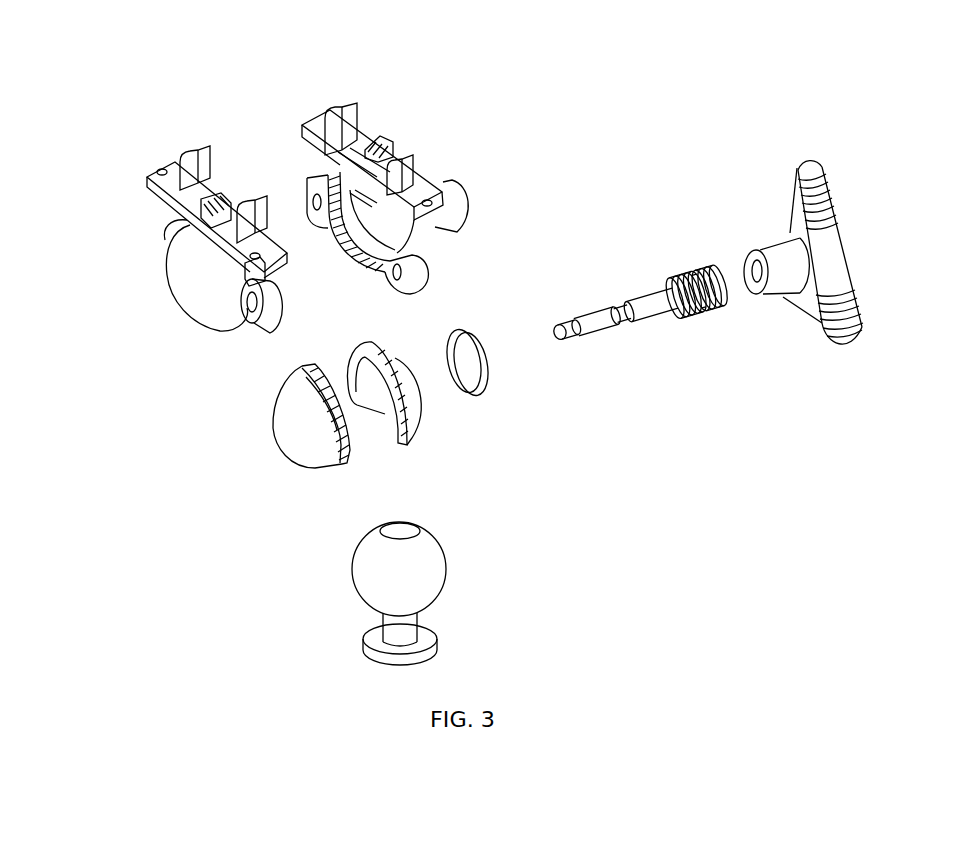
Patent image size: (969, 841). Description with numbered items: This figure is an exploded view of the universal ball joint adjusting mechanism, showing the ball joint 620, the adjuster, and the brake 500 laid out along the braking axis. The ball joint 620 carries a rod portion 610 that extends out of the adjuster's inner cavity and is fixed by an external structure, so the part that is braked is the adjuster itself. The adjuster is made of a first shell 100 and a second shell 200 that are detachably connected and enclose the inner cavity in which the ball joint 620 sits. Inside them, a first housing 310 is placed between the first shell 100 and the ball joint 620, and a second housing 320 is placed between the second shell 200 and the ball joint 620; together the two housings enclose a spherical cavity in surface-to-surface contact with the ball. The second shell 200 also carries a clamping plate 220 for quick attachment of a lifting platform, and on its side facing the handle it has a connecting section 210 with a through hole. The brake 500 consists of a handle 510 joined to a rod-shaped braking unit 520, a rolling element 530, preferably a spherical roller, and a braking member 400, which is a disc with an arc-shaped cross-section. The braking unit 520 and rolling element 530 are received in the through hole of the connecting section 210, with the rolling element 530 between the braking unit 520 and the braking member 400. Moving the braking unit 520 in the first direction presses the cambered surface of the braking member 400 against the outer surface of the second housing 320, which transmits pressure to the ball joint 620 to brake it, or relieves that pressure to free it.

The first shell 100 is at (150, 272).
The second shell 200 is at (313, 160).
The connecting section 210 is at (450, 192).
The clamping plate 220 is at (380, 148).
The first housing 310 is at (290, 435).
The second housing 320 is at (423, 405).
The braking member 400 is at (490, 367).
The brake 500 is at (702, 332).
The handle 510 is at (818, 162).
The braking unit 520 is at (622, 300).
The rolling element 530 is at (560, 322).
The rod portion 610 is at (383, 620).
The ball joint 620 is at (430, 552).